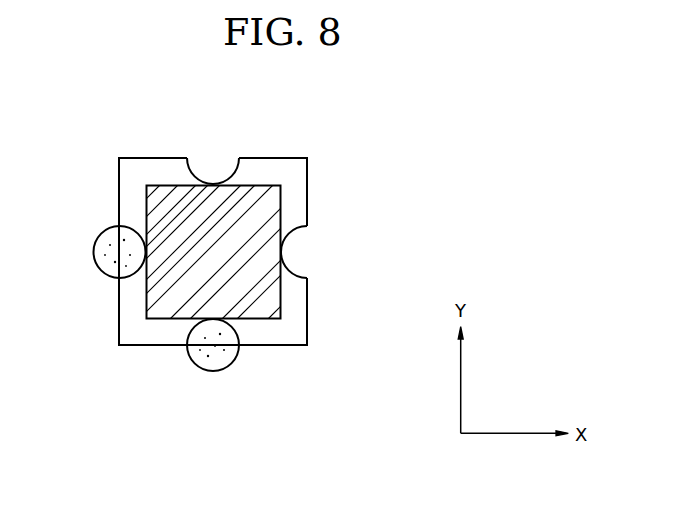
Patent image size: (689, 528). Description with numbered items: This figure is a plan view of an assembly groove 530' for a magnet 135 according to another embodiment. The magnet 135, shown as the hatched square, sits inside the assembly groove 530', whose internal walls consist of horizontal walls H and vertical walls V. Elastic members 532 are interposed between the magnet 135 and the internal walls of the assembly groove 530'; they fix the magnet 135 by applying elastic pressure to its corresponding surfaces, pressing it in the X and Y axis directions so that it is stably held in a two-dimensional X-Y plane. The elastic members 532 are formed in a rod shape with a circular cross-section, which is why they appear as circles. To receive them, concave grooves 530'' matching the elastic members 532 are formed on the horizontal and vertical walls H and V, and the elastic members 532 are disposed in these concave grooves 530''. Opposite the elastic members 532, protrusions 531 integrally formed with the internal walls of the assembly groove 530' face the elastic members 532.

The assembly groove 530' is at (213, 214).
The concave grooves 530'' is at (106, 310).
The protrusions 531 is at (193, 170).
The elastic members 532 is at (105, 248).
The magnet 135 is at (268, 217).
The horizontal wall H is at (267, 157).
The vertical wall V is at (119, 190).